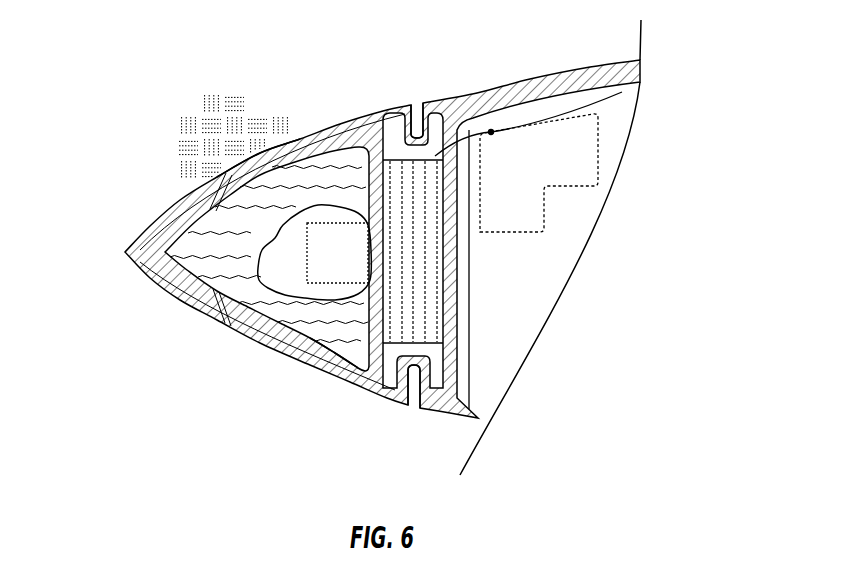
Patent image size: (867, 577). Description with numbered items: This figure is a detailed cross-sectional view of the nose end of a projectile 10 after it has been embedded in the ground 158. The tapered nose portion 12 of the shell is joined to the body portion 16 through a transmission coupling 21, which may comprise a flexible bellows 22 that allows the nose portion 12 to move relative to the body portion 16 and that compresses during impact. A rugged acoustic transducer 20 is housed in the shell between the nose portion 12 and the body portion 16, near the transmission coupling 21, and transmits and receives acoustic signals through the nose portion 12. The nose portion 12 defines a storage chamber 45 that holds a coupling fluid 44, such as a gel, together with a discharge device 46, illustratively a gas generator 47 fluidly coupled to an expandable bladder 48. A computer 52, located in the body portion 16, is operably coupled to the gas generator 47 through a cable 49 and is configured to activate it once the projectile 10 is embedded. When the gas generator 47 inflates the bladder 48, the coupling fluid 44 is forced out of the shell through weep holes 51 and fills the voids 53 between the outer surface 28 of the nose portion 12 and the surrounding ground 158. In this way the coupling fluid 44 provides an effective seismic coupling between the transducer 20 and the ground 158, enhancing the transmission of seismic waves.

The projectile 10 is at (146, 195).
The ground 158 is at (190, 130).
The voids 53 is at (272, 190).
The expandable bladder 48 is at (278, 250).
The gas generator 47 is at (320, 247).
The nose portion 12 is at (360, 232).
The bellows 22 is at (418, 103).
The cable 49 is at (470, 128).
The body portion 16 is at (586, 72).
The outer surface 28 is at (149, 232).
The weep holes 51 is at (151, 311).
The discharge device 46 is at (268, 306).
The coupling fluid 44 is at (268, 327).
The storage chamber 45 is at (342, 356).
The transducer 20 is at (362, 342).
The transmission coupling 21 is at (411, 410).
The computer 52 is at (577, 172).